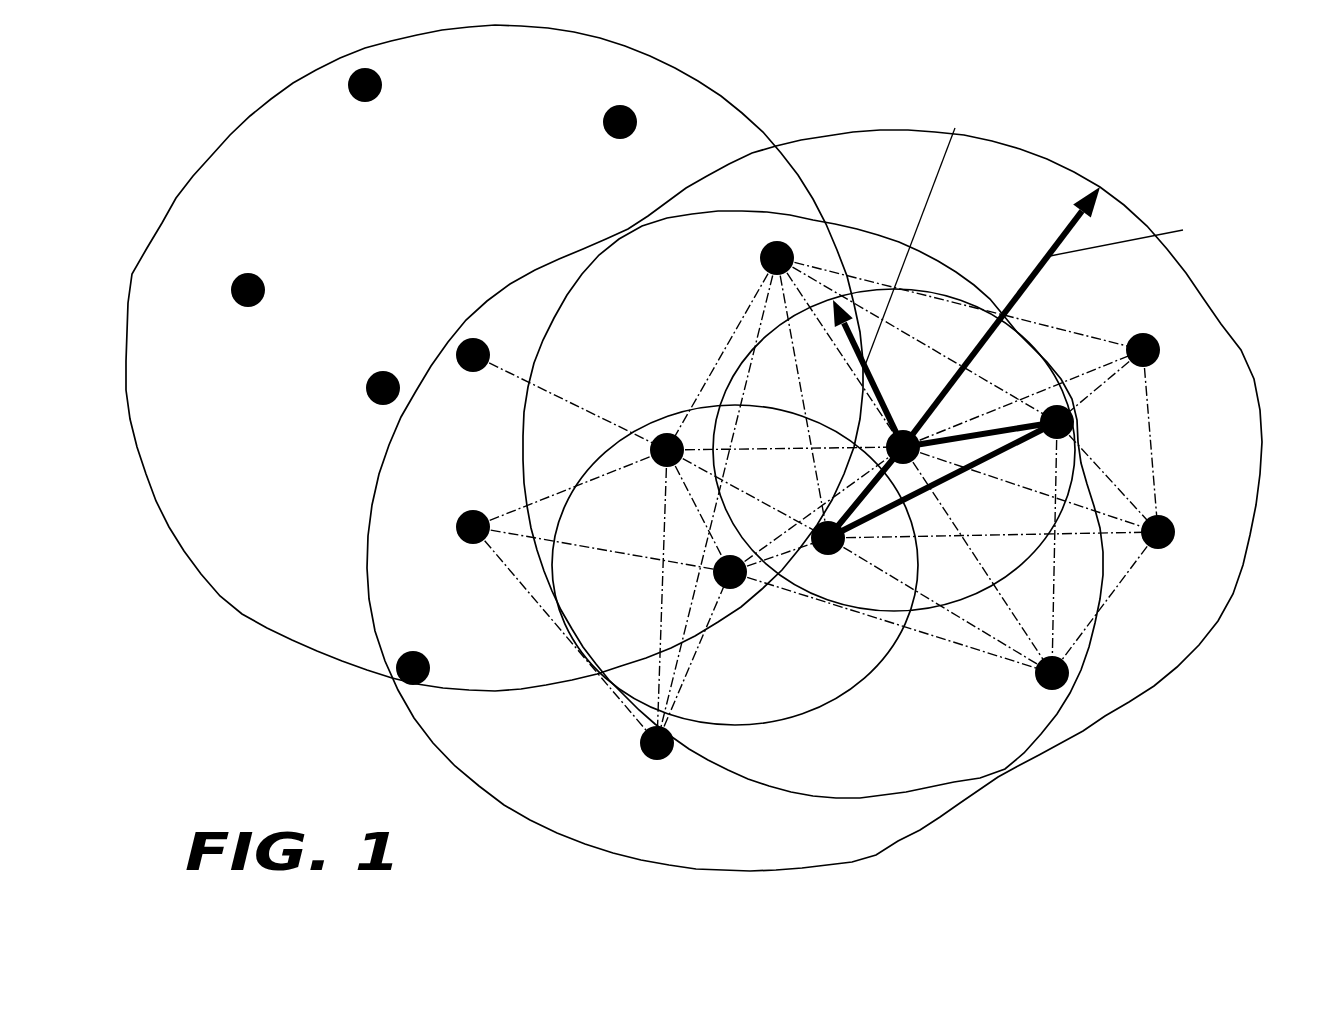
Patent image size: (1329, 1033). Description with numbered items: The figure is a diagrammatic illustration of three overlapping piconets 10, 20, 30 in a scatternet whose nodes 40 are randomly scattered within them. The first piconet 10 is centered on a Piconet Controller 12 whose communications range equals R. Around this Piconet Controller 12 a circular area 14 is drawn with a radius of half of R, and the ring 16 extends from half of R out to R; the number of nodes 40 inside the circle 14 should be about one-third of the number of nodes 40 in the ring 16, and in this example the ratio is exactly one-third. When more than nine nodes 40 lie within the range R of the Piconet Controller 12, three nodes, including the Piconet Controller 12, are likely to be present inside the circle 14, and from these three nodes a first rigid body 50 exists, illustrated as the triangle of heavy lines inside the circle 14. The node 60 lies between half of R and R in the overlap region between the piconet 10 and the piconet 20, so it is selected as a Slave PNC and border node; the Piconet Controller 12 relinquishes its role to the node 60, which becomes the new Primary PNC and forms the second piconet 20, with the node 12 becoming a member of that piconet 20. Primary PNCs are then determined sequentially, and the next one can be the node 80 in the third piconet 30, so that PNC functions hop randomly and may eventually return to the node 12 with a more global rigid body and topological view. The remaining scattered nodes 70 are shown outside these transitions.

The first piconet 10 is at (868, 131).
The Piconet Controller (PNC) 12 is at (990, 313).
The circular area 14 is at (1027, 557).
The ring area 16 is at (952, 622).
The second piconet 20 is at (792, 215).
The third piconet 30 is at (676, 68).
The nodes 40 is at (1073, 417).
The first rigid body 50 is at (1027, 515).
The node (Slave PNC / new Primary PNC) 60 is at (730, 572).
The isolated nodes 70 is at (640, 740).
The node 80 is at (462, 348).